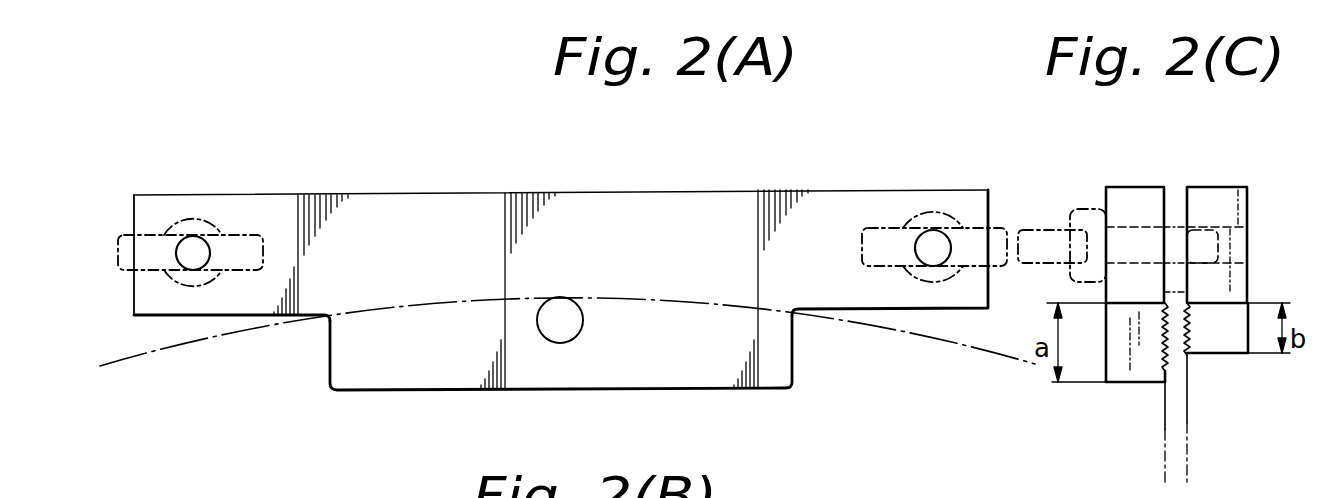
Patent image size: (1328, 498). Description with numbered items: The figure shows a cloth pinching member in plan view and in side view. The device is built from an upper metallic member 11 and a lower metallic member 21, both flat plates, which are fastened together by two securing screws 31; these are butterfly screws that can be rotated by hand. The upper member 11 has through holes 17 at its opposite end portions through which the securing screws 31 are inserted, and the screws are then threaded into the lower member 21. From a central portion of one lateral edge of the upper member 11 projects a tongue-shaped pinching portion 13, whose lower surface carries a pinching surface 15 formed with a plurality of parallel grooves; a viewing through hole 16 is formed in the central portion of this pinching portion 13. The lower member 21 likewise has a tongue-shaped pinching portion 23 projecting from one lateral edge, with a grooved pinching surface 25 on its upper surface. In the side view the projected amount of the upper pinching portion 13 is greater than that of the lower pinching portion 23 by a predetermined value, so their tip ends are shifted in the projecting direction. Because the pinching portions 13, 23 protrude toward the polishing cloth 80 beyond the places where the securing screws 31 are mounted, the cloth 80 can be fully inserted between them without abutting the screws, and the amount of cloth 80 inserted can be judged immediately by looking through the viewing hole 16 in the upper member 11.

In FIG. 2A, the upper metallic member 11 is at (722, 210).
In FIG. 2C, the upper metallic member 11 is at (1145, 200).
In FIG. 2A, the pinching portion 13 is at (775, 353).
In FIG. 2C, the pinching portion 13 is at (1133, 368).
In FIG. 2C, the pinching surface 15 is at (1173, 362).
In FIG. 2A, the viewing through hole 16 is at (568, 322).
In FIG. 2C, the through holes 17 is at (1123, 223).
In FIG. 2C, the lower metallic member 21 is at (1222, 195).
In FIG. 2C, the pinching portion 23 is at (1227, 343).
In FIG. 2C, the pinching surface 25 is at (1182, 340).
In FIG. 2A, the securing screws 31 is at (248, 234).
In FIG. 2C, the securing screws 31 is at (1033, 230).
In FIG. 2A, the polishing cloth 80 is at (922, 338).